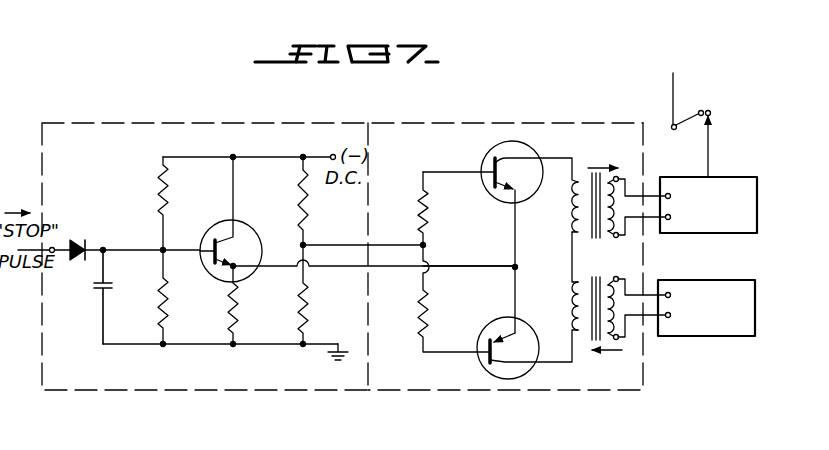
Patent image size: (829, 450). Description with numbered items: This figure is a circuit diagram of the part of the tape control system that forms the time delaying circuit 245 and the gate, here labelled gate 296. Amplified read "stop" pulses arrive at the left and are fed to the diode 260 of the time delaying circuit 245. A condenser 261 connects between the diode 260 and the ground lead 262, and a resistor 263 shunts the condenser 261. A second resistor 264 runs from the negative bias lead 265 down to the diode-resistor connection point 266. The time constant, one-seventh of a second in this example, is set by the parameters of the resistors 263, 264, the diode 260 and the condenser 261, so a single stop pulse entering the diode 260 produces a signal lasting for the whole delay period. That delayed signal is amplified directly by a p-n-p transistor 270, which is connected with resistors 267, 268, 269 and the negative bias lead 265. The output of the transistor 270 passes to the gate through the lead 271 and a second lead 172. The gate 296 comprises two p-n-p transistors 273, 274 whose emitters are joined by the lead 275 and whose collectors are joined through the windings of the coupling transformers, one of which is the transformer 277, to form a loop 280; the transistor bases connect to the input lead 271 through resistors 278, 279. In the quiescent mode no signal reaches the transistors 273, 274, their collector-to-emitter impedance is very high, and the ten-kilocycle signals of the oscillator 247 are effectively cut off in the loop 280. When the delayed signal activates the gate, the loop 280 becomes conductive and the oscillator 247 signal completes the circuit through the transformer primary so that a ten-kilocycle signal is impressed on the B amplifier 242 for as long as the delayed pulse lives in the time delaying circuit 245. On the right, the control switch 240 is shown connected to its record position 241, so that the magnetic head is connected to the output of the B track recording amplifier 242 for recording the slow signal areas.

The diode 260 is at (78, 243).
The condenser 261 is at (93, 285).
The ground lead 262 is at (136, 345).
The resistor 263 is at (169, 298).
The second resistor 264 is at (169, 187).
The negative bias lead 265 is at (241, 156).
The diode-resistor connection point 266 is at (160, 248).
The resistor 267 is at (237, 304).
The resistor 268 is at (307, 308).
The resistor 269 is at (307, 200).
The p-n-p transistor 270 is at (243, 229).
The lead 271 is at (409, 229).
The connecting line 172 is at (320, 271).
The p-n-p transistor 273 is at (528, 149).
The p-n-p transistor 274 is at (478, 368).
The lead 275 is at (511, 242).
The coupling transformer 277 is at (596, 277).
The resistor 278 is at (430, 216).
The resistor 279 is at (432, 322).
The loop 280 is at (562, 278).
The oscillator 247 is at (592, 238).
The B track recording amplifier 242 is at (682, 234).
The control switch 240 is at (690, 113).
The record position 241 is at (711, 113).
The time delaying circuit 245 is at (342, 272).
The gate circuit 296 is at (505, 273).